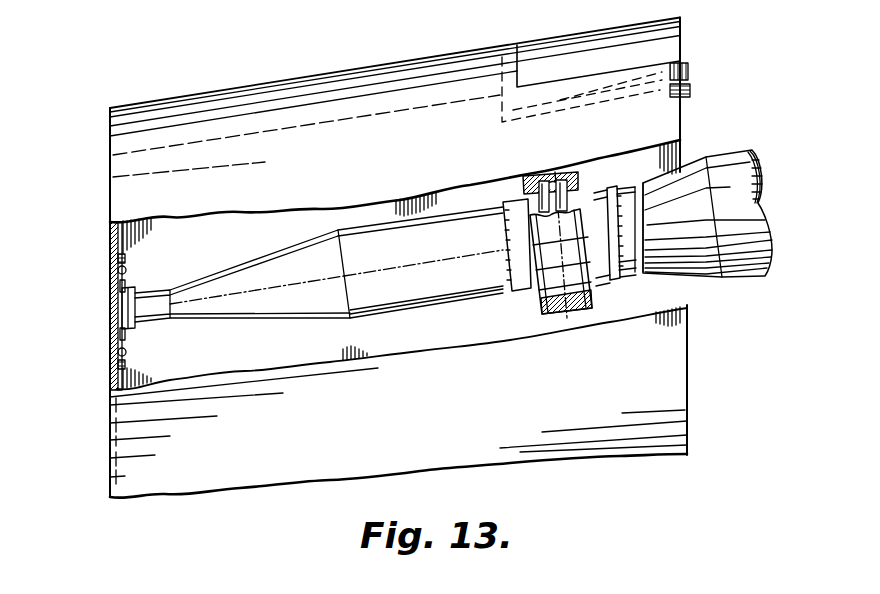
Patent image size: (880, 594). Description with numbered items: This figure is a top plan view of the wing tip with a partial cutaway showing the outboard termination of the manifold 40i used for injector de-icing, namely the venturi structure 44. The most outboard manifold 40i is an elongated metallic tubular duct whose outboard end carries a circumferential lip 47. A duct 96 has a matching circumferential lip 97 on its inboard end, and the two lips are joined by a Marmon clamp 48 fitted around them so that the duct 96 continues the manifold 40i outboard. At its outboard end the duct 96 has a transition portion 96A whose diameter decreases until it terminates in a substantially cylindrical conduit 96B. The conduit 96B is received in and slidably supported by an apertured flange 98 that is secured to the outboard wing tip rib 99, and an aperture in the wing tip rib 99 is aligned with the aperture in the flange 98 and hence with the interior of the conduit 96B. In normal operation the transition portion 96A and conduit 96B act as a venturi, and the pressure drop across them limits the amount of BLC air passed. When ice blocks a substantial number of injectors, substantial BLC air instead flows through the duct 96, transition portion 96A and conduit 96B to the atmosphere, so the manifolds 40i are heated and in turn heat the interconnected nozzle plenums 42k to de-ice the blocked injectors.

The venturi structure 44 is at (96, 414).
The nozzle plenum 42k is at (672, 29).
The outboard wing tip rib 99 is at (108, 352).
The apertured flange 98 is at (127, 279).
The cylindrical conduit 96B is at (150, 320).
The transition portion 96A is at (283, 318).
The duct 96 is at (408, 301).
The Marmon clamp 48 is at (551, 316).
The circumferential lip 97 is at (548, 177).
The circumferential lip 47 is at (586, 183).
The manifold 40i is at (707, 278).